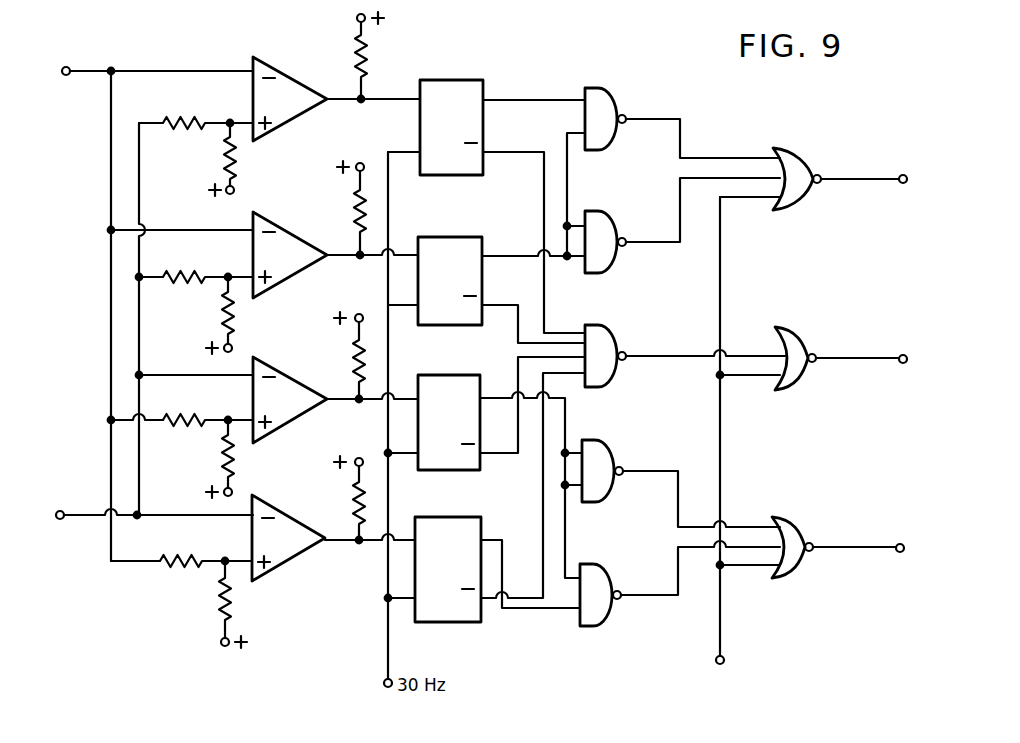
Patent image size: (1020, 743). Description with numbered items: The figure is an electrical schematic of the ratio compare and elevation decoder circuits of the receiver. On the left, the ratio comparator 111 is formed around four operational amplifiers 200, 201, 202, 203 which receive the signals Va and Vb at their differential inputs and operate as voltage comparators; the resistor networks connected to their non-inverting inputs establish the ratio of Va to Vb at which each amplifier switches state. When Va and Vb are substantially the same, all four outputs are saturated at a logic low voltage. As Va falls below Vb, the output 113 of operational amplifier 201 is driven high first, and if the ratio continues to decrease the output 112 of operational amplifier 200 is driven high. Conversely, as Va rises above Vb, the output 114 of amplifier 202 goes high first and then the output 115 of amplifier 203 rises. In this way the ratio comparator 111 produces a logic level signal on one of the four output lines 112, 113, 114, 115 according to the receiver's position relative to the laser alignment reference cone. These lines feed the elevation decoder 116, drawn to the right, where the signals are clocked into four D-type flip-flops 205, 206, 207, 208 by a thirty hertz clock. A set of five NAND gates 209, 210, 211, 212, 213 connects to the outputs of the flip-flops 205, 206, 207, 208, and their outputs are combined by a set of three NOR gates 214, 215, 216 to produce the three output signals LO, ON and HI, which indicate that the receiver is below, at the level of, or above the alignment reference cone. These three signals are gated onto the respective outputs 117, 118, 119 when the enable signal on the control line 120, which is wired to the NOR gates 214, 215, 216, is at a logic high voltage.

The ratio comparator 111 is at (238, 38).
The output line 112 is at (396, 99).
The output line 113 is at (346, 254).
The output line 114 is at (346, 398).
The output line 115 is at (370, 548).
The elevation decoder 116 is at (561, 56).
The output 117 is at (903, 175).
The output 118 is at (903, 355).
The output 119 is at (900, 544).
The control line 120 is at (724, 660).
The operational amplifier 200 is at (303, 107).
The operational amplifier 201 is at (303, 261).
The operational amplifier 202 is at (303, 407).
The operational amplifier 203 is at (302, 548).
The D-type flip-flop 205 is at (472, 133).
The D-type flip-flop 206 is at (470, 290).
The D-type flip-flop 207 is at (469, 434).
The D-type flip-flop 208 is at (466, 583).
The NAND gate 209 is at (605, 92).
The NAND gate 210 is at (598, 212).
The NAND gate 211 is at (604, 326).
The NAND gate 212 is at (604, 442).
The NAND gate 213 is at (600, 566).
The NOR gate 214 is at (778, 148).
The NOR gate 215 is at (780, 327).
The NOR gate 216 is at (783, 517).